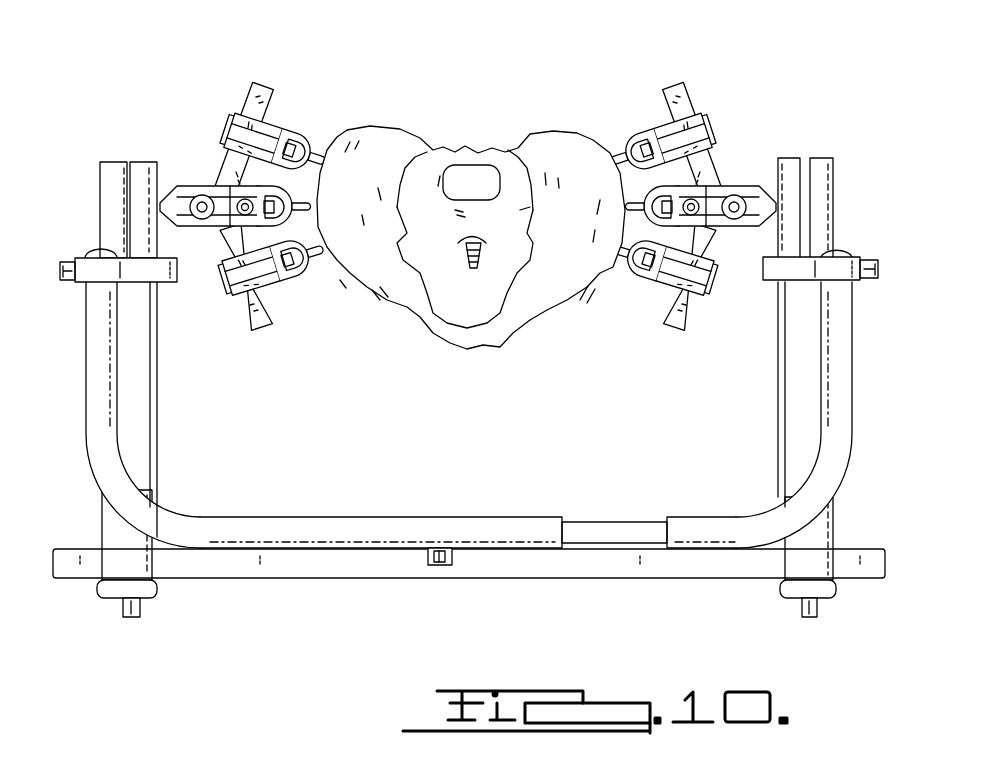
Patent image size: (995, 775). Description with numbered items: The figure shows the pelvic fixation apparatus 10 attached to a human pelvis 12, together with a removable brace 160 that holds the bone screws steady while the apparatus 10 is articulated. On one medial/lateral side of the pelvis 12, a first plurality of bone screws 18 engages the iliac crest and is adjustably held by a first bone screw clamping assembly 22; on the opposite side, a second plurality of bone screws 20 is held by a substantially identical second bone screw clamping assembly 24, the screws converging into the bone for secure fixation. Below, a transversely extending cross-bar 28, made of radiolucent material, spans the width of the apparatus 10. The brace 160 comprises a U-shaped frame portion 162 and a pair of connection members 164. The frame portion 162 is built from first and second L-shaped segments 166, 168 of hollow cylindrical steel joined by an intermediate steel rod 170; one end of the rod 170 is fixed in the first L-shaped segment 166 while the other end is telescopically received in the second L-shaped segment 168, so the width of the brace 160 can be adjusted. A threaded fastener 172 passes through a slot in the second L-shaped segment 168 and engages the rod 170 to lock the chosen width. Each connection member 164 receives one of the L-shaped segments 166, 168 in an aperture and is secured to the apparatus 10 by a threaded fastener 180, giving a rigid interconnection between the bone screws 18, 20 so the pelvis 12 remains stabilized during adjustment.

The apparatus 10 is at (474, 404).
The human pelvis 12 is at (584, 125).
The first plurality of bone screws 18 is at (313, 258).
The second plurality of bone screws 20 is at (615, 267).
The first bone screw clamping assembly 22 is at (245, 95).
The second bone screw clamping assembly 24 is at (700, 84).
The cross-bar 28 is at (303, 576).
The brace 160 is at (468, 482).
The U-shaped frame portion 162 is at (325, 513).
The connection member 164 is at (103, 268).
The first L-shaped segment 166 is at (82, 427).
The second L-shaped segment 168 is at (853, 367).
The intermediate steel rod 170 is at (607, 520).
The threaded fastener 172 is at (447, 566).
The threaded fastener 180 is at (57, 258).